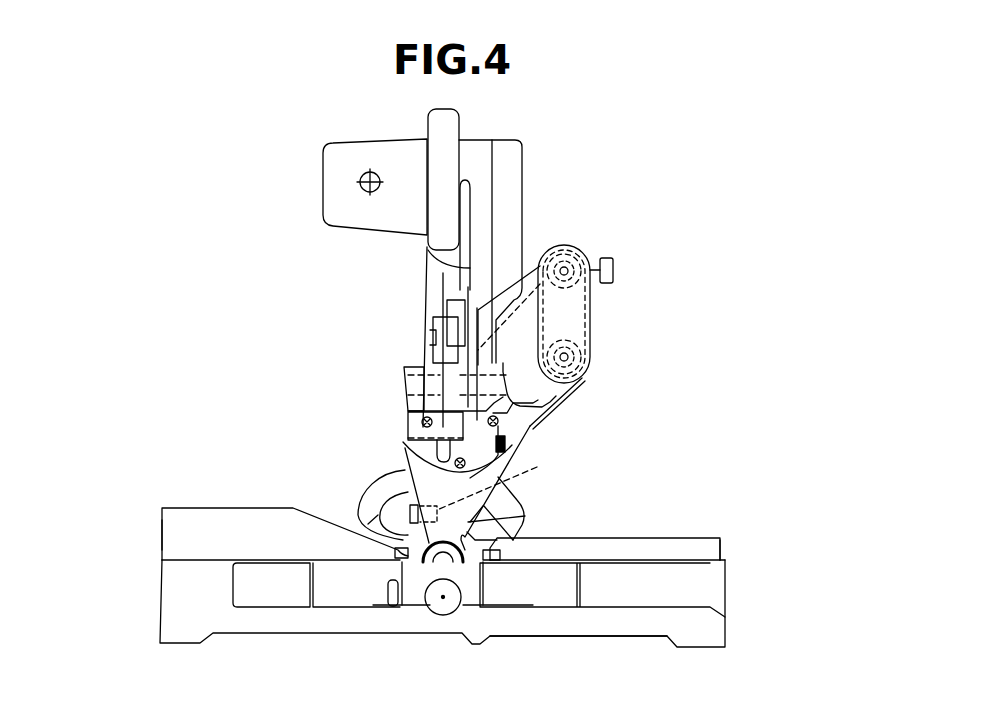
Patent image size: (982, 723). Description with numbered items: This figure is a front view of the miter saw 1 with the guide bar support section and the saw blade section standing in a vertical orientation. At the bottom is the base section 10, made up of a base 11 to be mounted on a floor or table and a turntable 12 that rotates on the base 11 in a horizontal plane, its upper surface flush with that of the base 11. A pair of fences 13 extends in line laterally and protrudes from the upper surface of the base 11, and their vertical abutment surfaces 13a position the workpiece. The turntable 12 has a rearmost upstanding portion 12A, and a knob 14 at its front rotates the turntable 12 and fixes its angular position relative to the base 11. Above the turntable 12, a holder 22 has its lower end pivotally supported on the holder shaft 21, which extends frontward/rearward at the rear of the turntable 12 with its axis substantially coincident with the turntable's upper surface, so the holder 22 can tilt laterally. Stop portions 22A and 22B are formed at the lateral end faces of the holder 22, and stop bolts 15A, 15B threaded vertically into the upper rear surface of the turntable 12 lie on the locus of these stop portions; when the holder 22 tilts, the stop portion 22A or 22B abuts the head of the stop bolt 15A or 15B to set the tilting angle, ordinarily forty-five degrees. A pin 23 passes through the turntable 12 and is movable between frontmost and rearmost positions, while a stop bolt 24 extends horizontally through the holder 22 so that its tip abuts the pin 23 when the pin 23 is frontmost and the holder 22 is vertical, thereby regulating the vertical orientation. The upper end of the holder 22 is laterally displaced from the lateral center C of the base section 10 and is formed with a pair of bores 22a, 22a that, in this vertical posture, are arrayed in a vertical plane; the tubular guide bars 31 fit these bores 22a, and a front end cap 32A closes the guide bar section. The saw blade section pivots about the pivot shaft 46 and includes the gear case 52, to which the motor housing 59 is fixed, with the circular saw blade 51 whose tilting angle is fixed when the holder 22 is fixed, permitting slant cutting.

The miter saw 1 is at (603, 162).
The base section 10 is at (628, 642).
The base 11 is at (715, 634).
The turntable 12 is at (538, 603).
The rearmost upstanding portion 12A is at (520, 490).
The fences 13 is at (223, 512).
The vertical abutment surfaces 13a is at (168, 535).
The knob 14 is at (451, 611).
The stop bolt 15A is at (397, 550).
The stop bolt 15B is at (503, 553).
The holder shaft 21 is at (440, 565).
The holder 22 is at (405, 443).
The stop portion 22A is at (377, 507).
The stop portion 22B is at (513, 514).
The bores 22a is at (597, 288).
The pin 23 is at (537, 467).
The stop bolt 24 is at (383, 487).
The guide bars 31 is at (583, 249).
The front end cap 32A is at (580, 315).
The pivot shaft 46 is at (404, 402).
The circular saw blade 51 is at (442, 302).
The gear case 52 is at (517, 221).
The motor housing 59 is at (368, 233).
The lateral center C is at (443, 598).